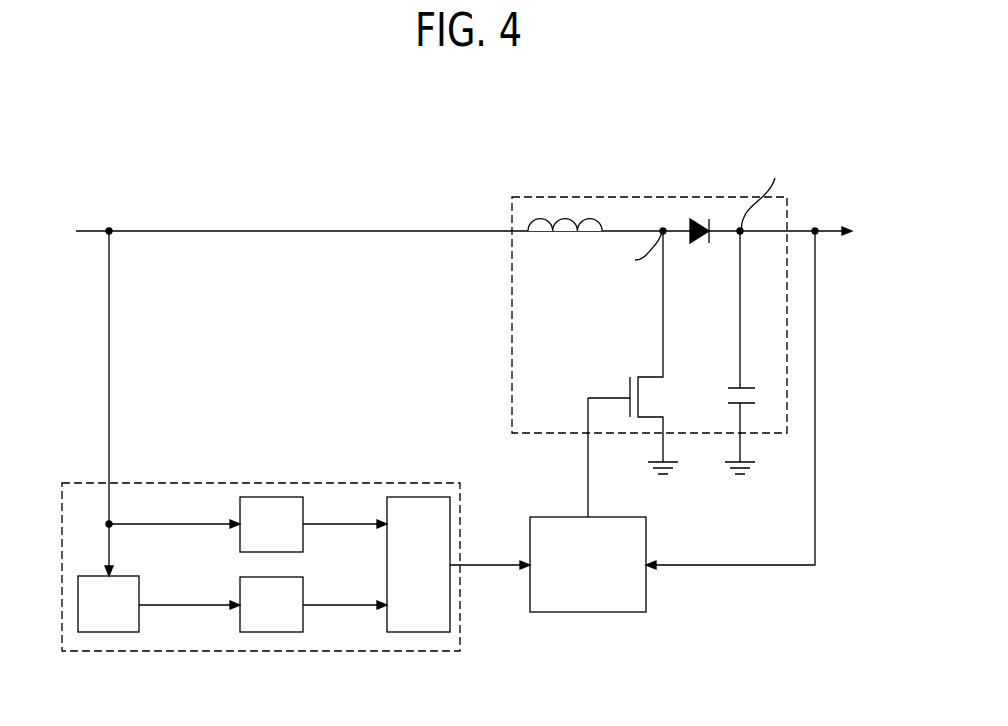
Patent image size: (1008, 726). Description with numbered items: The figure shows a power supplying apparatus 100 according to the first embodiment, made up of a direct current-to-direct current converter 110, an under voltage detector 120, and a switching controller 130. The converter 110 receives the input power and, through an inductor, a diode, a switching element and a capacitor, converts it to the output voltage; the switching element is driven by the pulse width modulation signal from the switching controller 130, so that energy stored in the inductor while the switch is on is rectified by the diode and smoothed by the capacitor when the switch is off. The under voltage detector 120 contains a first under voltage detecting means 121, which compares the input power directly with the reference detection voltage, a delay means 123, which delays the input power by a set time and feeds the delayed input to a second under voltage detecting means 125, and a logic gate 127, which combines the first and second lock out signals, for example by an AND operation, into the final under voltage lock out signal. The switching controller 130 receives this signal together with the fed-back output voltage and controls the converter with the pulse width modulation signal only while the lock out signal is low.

The direct current-to-direct current converter 100 is at (127, 143).
The direct current-to-direct current converter 110 is at (662, 197).
The under voltage detector 120 is at (272, 483).
The first under voltage detecting means 121 is at (287, 539).
The delay means 123 is at (124, 616).
The second under voltage detecting means 125 is at (287, 616).
The logic gate 127 is at (435, 576).
The switching controller 130 is at (605, 579).